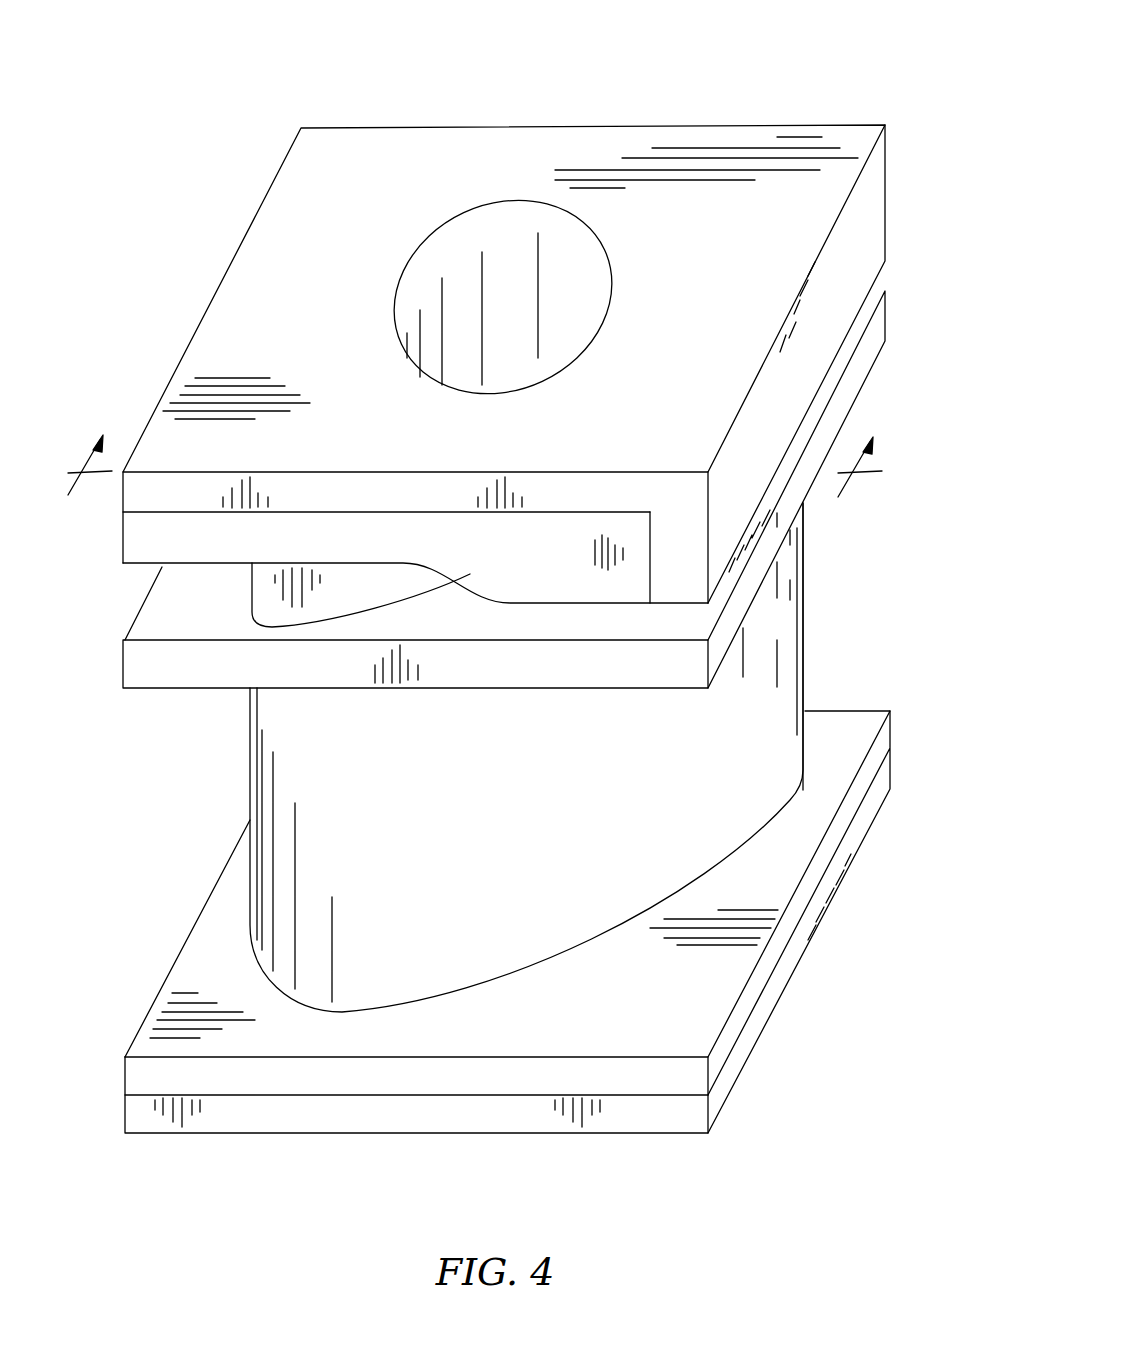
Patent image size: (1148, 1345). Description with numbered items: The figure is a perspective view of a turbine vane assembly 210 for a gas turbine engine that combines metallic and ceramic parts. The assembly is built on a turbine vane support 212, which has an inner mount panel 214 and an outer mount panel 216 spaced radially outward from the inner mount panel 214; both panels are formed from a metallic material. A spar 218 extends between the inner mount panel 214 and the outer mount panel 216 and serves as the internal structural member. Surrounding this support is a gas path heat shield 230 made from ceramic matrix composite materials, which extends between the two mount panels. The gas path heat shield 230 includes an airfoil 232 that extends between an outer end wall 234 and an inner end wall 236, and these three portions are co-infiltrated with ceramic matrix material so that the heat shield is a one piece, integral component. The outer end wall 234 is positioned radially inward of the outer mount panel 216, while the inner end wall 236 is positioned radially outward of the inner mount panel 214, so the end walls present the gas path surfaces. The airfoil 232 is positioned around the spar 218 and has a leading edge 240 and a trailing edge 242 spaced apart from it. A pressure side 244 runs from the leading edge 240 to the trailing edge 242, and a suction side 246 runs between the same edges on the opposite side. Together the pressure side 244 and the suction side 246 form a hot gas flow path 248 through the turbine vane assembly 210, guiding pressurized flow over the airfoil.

The turbine vane assembly 210 is at (766, 73).
The turbine vane support 212 is at (860, 133).
The inner mount panel 214 is at (755, 1031).
The outer mount panel 216 is at (872, 213).
The spar 218 is at (497, 272).
The gas path heat shield 230 is at (795, 643).
The airfoil 232 is at (797, 587).
The outer end wall 234 is at (135, 548).
The inner end wall 236 is at (710, 1015).
The leading edge 240 is at (267, 780).
The trailing edge 242 is at (808, 678).
The pressure side 244 is at (247, 741).
The suction side 246 is at (708, 752).
The hot gas flow path 248 is at (520, 837).